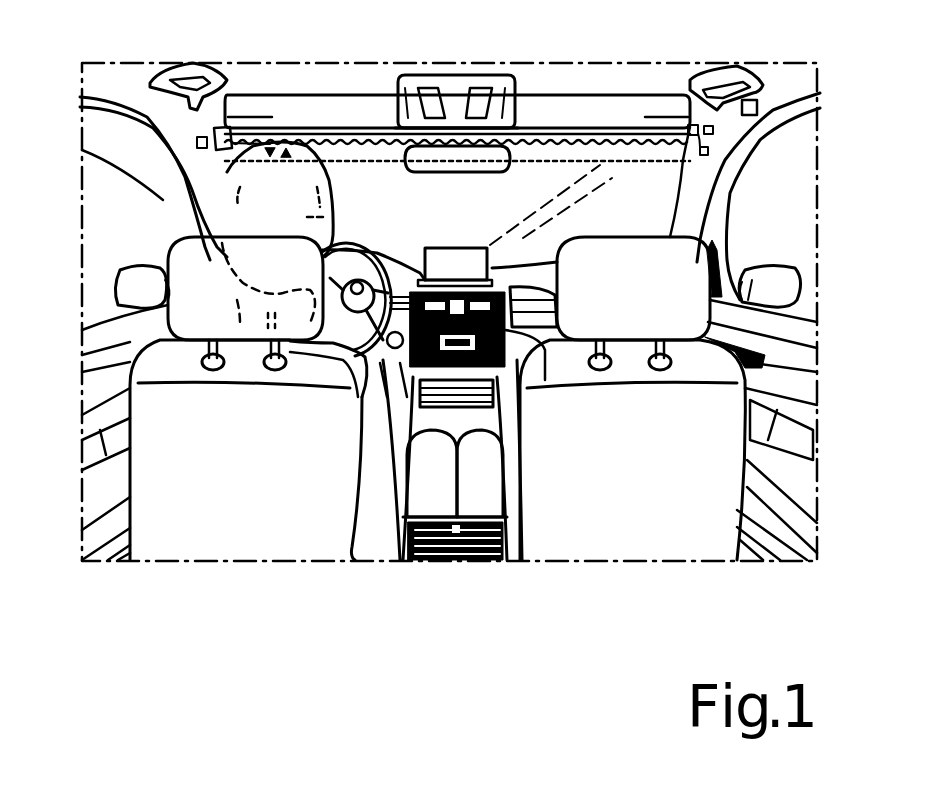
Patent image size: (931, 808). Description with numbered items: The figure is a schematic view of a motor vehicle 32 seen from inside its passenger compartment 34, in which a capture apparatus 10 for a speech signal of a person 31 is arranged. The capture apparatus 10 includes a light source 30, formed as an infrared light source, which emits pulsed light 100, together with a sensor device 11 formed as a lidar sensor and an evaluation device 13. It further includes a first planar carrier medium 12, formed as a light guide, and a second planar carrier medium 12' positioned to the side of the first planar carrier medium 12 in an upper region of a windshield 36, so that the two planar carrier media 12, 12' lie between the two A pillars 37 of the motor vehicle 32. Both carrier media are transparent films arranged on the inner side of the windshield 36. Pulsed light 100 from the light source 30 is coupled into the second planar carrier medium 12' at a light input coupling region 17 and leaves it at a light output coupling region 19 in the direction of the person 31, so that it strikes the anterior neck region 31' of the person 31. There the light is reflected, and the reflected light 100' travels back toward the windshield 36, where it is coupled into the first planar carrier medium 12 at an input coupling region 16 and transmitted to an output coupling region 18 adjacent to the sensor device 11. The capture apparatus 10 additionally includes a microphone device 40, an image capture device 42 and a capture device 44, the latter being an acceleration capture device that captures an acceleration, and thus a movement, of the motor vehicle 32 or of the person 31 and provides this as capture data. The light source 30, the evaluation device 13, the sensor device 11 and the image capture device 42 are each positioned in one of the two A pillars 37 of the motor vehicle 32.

The capture apparatus 10 is at (680, 96).
The sensor device 11 is at (727, 148).
The first planar carrier medium 12 is at (443, 74).
The second planar carrier medium 12' is at (260, 89).
The evaluation device 13 is at (728, 198).
The input coupling region 16 is at (300, 157).
The light input coupling region 17 is at (236, 192).
The output coupling region 18 is at (690, 143).
The light output coupling region 19 is at (232, 143).
The light source 30 is at (197, 143).
The person 31 is at (439, 250).
The anterior neck region 31' is at (144, 315).
The motor vehicle 32 is at (167, 610).
The passenger compartment 34 is at (470, 562).
The windshield 36 is at (603, 177).
The A pillars 37 is at (225, 210).
The microphone device 40 is at (457, 144).
The image capture device 42 is at (713, 130).
The capture device 44 is at (758, 107).
The pulsed light 100 is at (226, 165).
The reflected light 100' is at (456, 129).